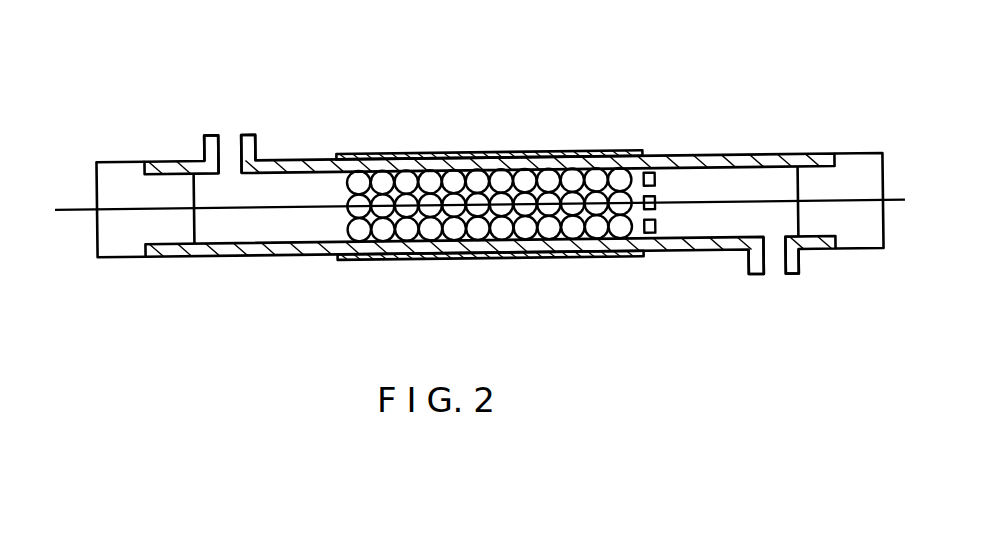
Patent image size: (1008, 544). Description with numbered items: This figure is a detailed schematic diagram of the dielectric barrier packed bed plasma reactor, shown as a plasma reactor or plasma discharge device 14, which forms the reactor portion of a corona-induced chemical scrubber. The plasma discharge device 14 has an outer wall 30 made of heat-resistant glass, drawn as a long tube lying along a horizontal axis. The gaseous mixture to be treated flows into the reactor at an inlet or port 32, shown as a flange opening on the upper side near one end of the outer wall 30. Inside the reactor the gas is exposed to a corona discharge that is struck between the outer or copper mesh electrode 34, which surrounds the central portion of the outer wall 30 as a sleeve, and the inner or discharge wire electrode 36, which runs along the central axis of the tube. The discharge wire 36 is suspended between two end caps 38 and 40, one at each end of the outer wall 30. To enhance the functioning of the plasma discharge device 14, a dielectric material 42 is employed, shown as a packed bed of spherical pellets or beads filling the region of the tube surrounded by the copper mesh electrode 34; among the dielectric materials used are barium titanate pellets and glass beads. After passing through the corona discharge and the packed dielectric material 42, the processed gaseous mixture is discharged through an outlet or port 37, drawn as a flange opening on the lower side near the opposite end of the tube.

The plasma discharge device 14 is at (479, 185).
The outer wall 30 is at (295, 253).
The inlet port 32 is at (232, 140).
The copper mesh electrode 34 is at (538, 257).
The discharge wire electrode 36 is at (753, 202).
The outlet port 37 is at (773, 267).
The end cap 38 is at (128, 235).
The end cap 40 is at (853, 230).
The dielectric material 42 is at (457, 180).